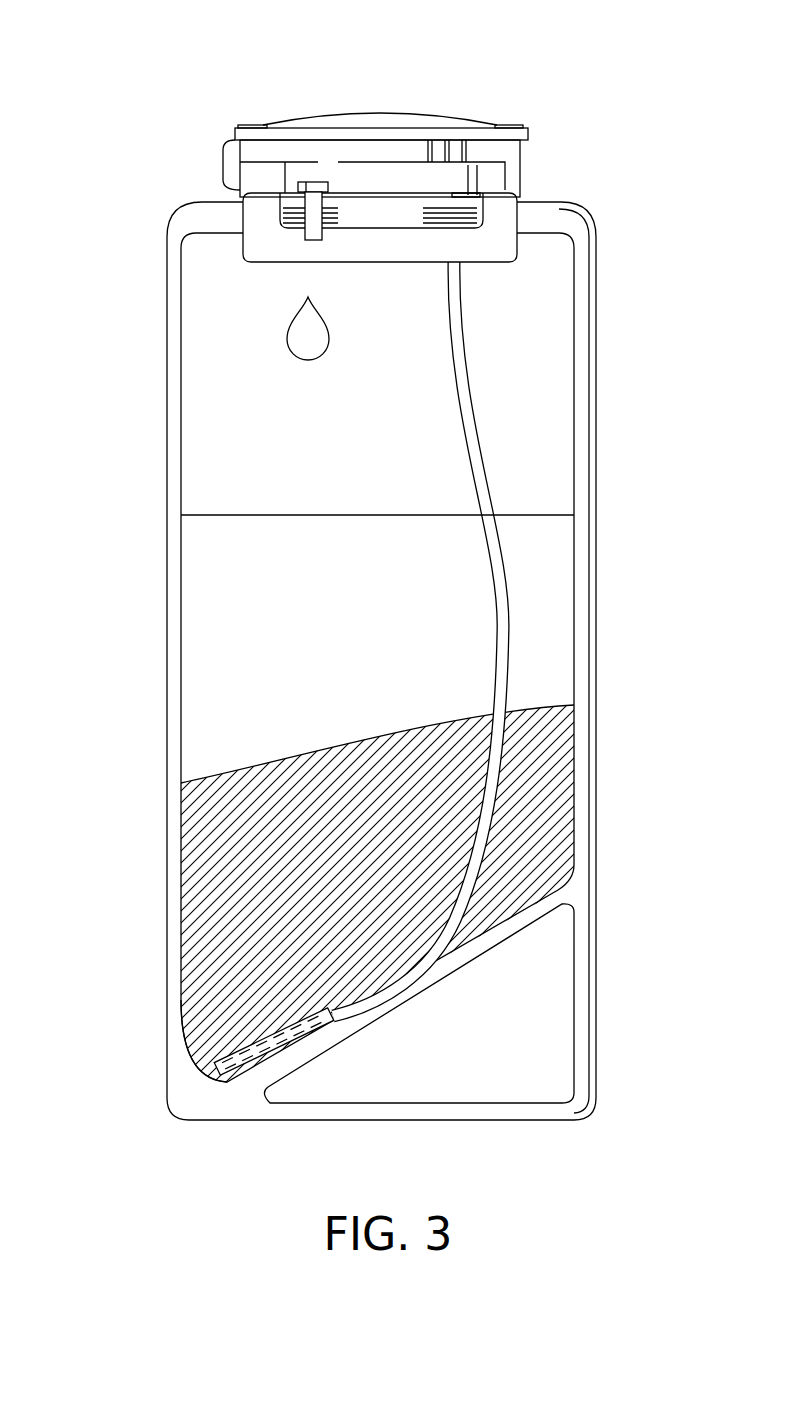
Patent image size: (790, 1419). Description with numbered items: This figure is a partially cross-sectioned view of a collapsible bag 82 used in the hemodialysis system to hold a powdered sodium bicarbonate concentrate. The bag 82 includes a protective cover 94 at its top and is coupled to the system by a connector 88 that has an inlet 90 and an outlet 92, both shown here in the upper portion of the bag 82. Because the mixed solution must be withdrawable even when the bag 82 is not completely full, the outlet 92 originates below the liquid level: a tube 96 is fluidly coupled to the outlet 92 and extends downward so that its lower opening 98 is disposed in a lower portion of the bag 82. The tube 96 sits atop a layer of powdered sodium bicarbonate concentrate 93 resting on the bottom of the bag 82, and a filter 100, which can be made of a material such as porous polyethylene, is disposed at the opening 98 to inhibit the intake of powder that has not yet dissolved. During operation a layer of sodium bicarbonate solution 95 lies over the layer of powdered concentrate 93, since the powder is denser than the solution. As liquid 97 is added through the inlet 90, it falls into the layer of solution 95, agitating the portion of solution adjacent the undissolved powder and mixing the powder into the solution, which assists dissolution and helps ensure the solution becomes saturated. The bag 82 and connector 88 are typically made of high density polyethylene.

The bag 82 is at (612, 538).
The connector 88 is at (222, 157).
The inlet 90 is at (303, 190).
The outlet 92 is at (468, 195).
The powdered sodium bicarbonate concentrate 93 is at (205, 865).
The protective cover 94 is at (262, 125).
The sodium bicarbonate solution 95 is at (383, 527).
The tube 96 is at (497, 638).
The liquid 97 is at (287, 341).
The lower opening 98 is at (223, 1065).
The filter 100 is at (257, 1043).